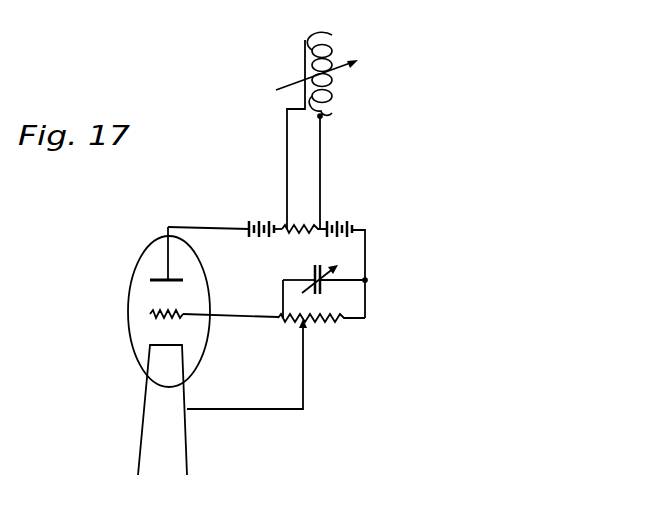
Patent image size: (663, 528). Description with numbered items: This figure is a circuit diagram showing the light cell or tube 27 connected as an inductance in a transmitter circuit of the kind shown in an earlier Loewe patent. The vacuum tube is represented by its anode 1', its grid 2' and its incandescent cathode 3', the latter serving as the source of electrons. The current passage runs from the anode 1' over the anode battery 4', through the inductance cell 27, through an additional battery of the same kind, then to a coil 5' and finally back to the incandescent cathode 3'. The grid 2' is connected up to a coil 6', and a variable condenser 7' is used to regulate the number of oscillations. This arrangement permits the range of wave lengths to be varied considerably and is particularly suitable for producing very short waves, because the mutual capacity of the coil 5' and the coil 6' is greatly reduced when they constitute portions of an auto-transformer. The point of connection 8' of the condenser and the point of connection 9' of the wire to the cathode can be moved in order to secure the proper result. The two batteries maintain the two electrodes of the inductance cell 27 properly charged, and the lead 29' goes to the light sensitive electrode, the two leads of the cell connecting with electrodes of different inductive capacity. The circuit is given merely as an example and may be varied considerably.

The anode 1' is at (191, 256).
The grid 2' is at (205, 314).
The incandescent cathode 3' is at (159, 404).
The anode battery 4' is at (263, 215).
The coil 5' is at (325, 329).
The coil 6' is at (292, 334).
The variable condenser 7' is at (325, 276).
The point of connection of the condenser 8' is at (272, 299).
The point of connection of the wire to the cathode 9' is at (256, 371).
The light cell or tube 27 is at (328, 88).
The lead 29' is at (269, 134).